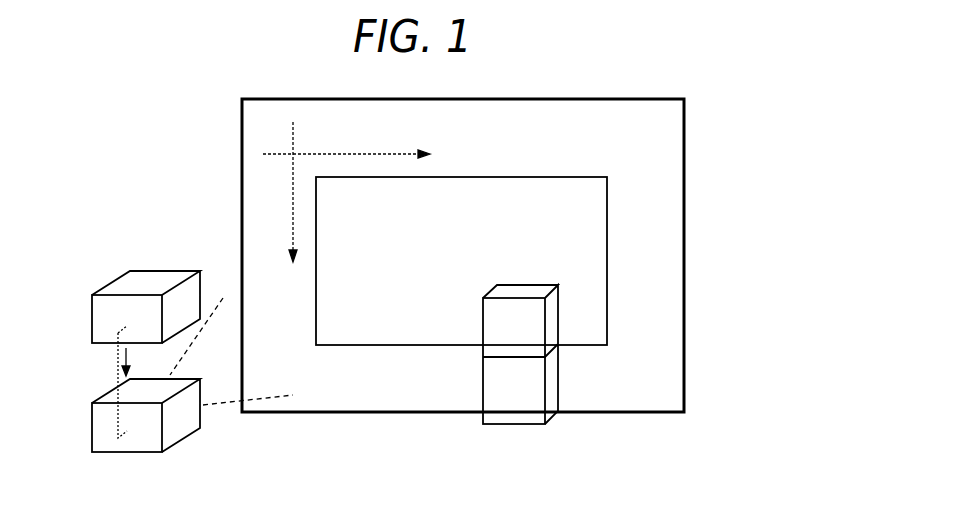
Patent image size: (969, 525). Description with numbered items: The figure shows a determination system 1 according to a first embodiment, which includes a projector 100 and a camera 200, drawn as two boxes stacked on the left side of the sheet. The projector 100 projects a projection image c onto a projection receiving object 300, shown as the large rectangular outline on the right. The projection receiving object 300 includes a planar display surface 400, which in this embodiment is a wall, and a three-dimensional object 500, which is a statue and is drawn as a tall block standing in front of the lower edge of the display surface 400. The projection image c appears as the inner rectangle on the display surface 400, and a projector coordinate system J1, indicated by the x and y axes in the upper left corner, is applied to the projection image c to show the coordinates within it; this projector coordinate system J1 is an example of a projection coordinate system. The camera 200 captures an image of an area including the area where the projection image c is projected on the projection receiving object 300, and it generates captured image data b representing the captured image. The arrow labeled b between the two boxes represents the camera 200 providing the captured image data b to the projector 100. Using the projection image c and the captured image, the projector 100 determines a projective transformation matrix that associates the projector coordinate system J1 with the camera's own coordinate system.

The determination system 1 is at (123, 203).
The projector 100 is at (112, 400).
The camera 200 is at (112, 288).
The projection receiving object 300 is at (712, 137).
The display surface 400 is at (633, 223).
The three-dimensional object 500 is at (513, 403).
The projector coordinate system J1 is at (310, 137).
The captured image data b is at (132, 382).
The projection image c is at (497, 177).